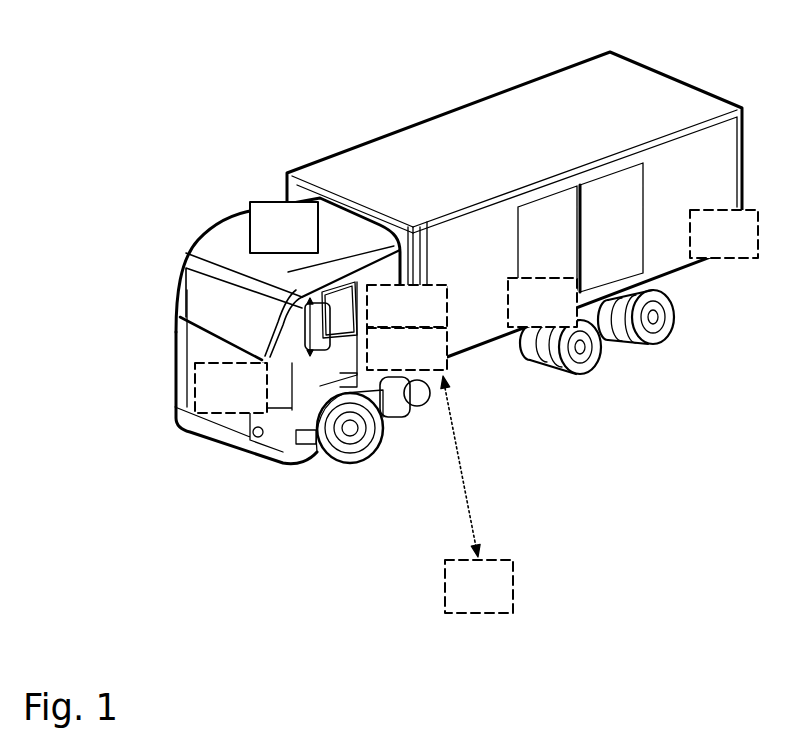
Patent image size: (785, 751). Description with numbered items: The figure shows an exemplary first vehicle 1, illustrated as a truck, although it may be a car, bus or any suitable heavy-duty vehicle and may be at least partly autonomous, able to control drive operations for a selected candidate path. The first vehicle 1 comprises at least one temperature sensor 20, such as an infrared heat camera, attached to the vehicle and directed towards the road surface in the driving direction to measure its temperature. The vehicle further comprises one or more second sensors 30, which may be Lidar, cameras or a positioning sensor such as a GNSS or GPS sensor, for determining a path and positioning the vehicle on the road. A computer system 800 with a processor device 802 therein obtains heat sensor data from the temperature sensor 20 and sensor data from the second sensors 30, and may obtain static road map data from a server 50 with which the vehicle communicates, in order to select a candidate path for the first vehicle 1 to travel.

The first vehicle 1 is at (318, 116).
The temperature sensor 20 is at (262, 247).
The second sensors 30 is at (217, 407).
The server 50 is at (467, 607).
The computer system 800 is at (428, 319).
The processor device 802 is at (428, 361).